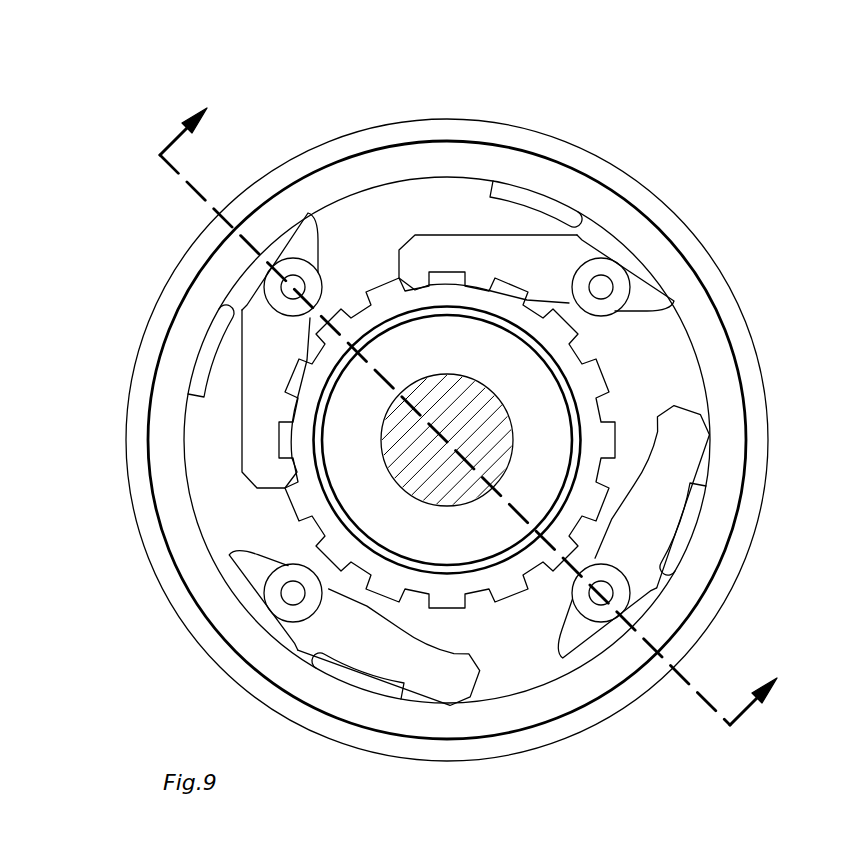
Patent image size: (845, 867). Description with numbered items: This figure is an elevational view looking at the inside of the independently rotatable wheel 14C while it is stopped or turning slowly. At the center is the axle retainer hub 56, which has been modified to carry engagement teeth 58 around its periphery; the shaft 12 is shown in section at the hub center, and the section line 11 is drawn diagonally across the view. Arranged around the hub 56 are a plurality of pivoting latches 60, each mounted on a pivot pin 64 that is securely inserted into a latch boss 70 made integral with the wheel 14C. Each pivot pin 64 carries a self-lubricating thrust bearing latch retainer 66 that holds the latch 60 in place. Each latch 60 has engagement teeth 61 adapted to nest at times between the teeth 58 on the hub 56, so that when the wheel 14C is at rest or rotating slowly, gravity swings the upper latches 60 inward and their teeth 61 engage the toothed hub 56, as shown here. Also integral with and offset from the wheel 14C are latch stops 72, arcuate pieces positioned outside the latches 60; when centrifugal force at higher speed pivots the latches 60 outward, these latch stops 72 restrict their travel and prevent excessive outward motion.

The section line 11- 11 is at (485, 410).
The shaft 12 is at (503, 399).
The independently rotatable wheel 14C is at (590, 148).
The axle retainer hub 56 is at (603, 358).
The engagement teeth 58 is at (290, 508).
The pivoting latch 60 is at (420, 236).
The engagement teeth 61 is at (418, 292).
The pivot pin 64 is at (300, 278).
The self-lubricating thrust bearing latch retainer 66 is at (283, 308).
The latch boss 70 is at (293, 247).
The latch stop 72 is at (530, 192).